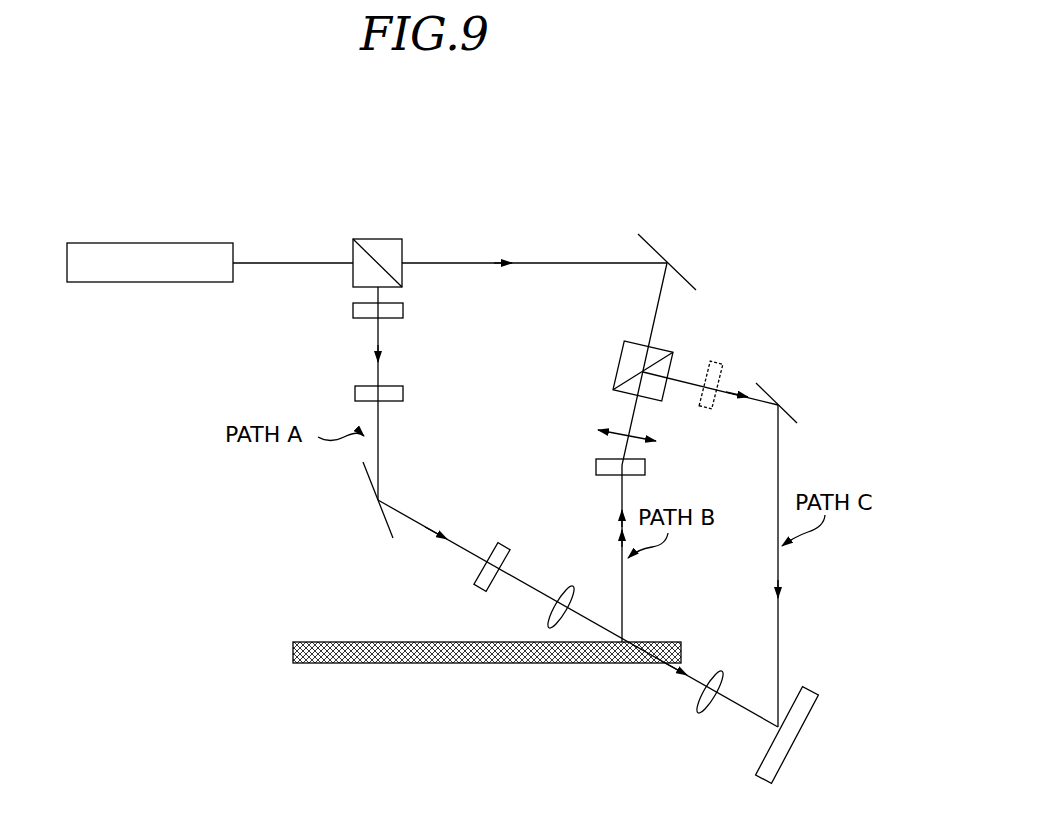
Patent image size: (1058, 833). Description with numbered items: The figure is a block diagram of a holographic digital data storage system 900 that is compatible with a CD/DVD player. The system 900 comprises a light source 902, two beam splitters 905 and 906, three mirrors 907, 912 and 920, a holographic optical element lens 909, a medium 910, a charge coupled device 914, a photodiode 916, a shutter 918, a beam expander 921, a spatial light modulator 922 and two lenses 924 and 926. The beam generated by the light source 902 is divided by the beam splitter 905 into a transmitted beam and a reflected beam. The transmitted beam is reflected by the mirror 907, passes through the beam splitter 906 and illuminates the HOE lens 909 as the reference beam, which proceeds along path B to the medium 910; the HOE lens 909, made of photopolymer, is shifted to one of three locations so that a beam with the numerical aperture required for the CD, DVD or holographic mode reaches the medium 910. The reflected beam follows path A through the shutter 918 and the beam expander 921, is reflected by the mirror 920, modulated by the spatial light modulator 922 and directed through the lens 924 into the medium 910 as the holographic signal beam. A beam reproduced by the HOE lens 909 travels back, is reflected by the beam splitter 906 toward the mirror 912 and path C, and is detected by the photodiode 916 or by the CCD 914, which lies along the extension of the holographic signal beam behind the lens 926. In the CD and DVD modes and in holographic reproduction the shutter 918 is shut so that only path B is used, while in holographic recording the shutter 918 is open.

The holographic digital data storage system 900 is at (631, 90).
The light source 902 is at (187, 243).
The beam splitter 905 is at (387, 239).
The beam splitter 906 is at (662, 350).
The mirror 907 is at (658, 245).
The holographic optical element (HOE) lens 909 is at (596, 466).
The medium 910 is at (478, 664).
The mirror 912 is at (767, 385).
The charge coupled device (CCD) 914 is at (795, 743).
The photodiode (PD) 916 is at (713, 362).
The shutter 918 is at (353, 311).
The mirror 920 is at (383, 524).
The beam expander 921 is at (355, 393).
The spatial light modulator (SLM) 922 is at (500, 540).
The lens 924 is at (568, 590).
The lens 926 is at (718, 675).